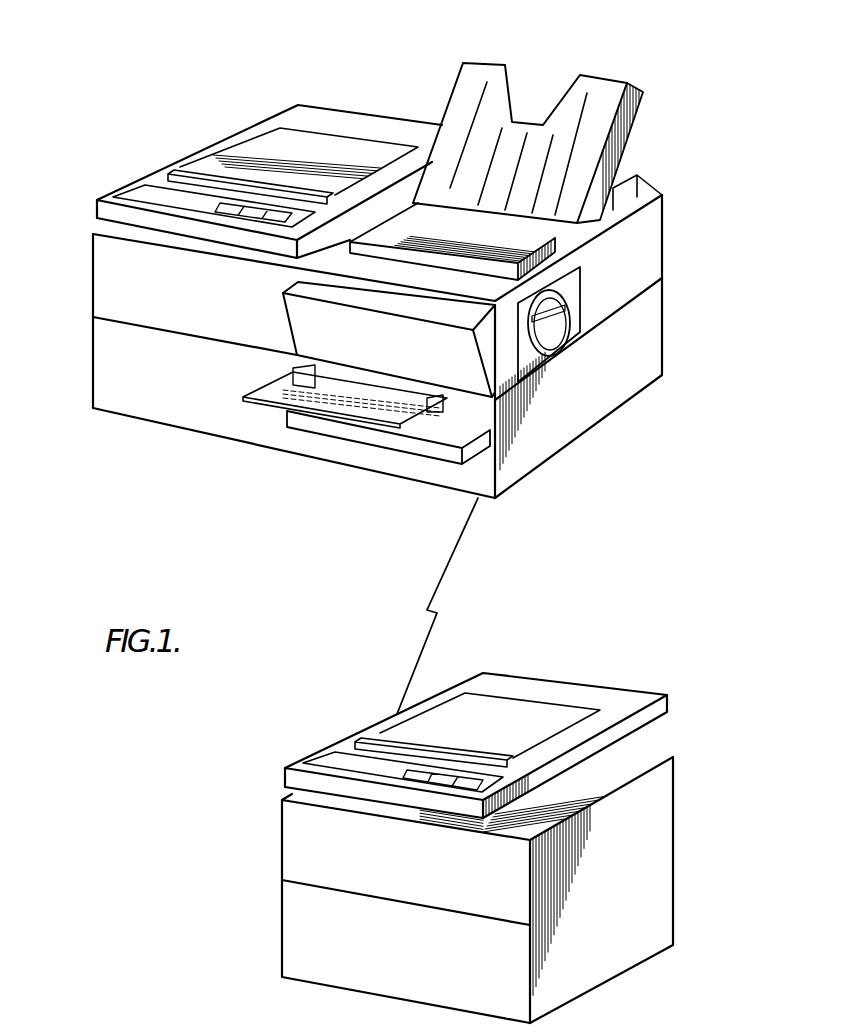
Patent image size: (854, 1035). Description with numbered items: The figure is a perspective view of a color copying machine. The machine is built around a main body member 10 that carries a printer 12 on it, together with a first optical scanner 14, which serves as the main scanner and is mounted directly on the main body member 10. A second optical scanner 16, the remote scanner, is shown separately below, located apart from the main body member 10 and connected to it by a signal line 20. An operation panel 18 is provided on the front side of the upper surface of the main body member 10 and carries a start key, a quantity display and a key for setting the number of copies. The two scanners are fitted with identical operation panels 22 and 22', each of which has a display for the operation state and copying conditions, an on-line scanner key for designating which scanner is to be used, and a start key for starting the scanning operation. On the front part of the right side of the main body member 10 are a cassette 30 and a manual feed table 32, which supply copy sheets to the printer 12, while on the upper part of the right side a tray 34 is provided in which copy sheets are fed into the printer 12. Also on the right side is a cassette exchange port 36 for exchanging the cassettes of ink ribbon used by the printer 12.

The main body member 10 is at (643, 386).
The printer 12 is at (663, 196).
The first optical scanner 14 is at (328, 108).
The second optical scanner 16 is at (673, 703).
The operation panel 18 is at (298, 282).
The signal line 20 is at (445, 584).
The operation panel 22 is at (179, 167).
The operation panel 22' is at (330, 752).
The cassette 30 is at (343, 424).
The manual feed table 32 is at (287, 394).
The tray 34 is at (630, 117).
The cassette exchange port 36 is at (576, 333).